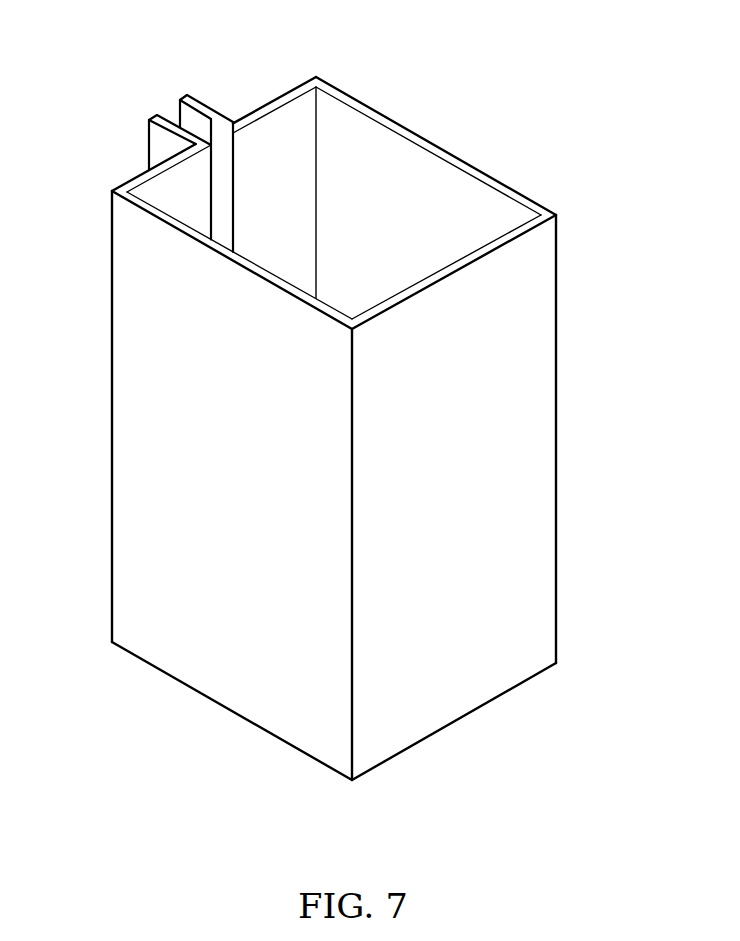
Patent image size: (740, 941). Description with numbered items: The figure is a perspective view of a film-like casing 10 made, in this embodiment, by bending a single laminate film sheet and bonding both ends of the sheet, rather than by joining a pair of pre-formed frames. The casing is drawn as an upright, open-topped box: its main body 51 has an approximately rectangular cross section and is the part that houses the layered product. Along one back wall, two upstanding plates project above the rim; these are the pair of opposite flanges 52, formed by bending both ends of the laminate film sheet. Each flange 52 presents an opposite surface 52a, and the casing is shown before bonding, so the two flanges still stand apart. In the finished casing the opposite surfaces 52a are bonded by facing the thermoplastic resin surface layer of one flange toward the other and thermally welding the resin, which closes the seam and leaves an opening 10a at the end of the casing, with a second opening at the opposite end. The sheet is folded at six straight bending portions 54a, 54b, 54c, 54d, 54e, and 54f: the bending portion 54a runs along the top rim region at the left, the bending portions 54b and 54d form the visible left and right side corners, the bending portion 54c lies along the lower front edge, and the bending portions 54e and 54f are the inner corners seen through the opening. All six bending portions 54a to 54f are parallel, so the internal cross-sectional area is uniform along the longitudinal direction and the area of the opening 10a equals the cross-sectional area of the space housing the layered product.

The film-like casing 10 is at (466, 94).
The opening 10a is at (447, 203).
The main body 51 is at (525, 417).
The flange 52 is at (162, 142).
The opposite surface of flange 52a is at (168, 110).
The bending portion 54a is at (212, 178).
The bending portion 54b is at (112, 478).
The bending portion 54c is at (352, 687).
The bending portion 54d is at (558, 545).
The bending portion 54e is at (322, 150).
The bending portion 54f is at (233, 177).